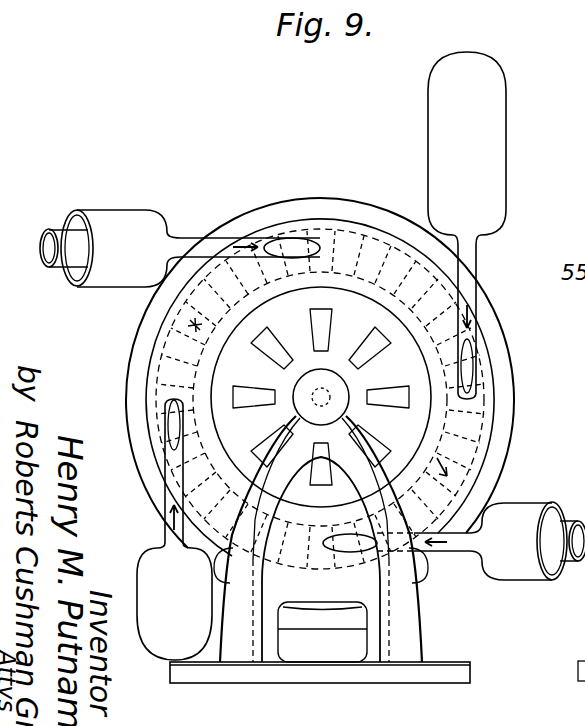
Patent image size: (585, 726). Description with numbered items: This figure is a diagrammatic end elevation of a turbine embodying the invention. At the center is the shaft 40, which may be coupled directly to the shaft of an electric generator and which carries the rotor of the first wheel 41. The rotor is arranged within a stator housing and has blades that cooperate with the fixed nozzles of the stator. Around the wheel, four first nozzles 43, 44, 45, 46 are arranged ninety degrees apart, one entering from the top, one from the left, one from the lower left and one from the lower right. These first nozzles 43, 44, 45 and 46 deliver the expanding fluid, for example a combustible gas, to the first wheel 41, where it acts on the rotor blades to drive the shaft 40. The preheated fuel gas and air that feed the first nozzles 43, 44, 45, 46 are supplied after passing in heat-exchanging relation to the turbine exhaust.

The shaft 40 is at (324, 394).
The first wheel 41 is at (478, 397).
The first nozzle 43 is at (477, 250).
The first nozzle 44 is at (214, 240).
The first nozzle 45 is at (165, 534).
The first nozzle 46 is at (461, 552).